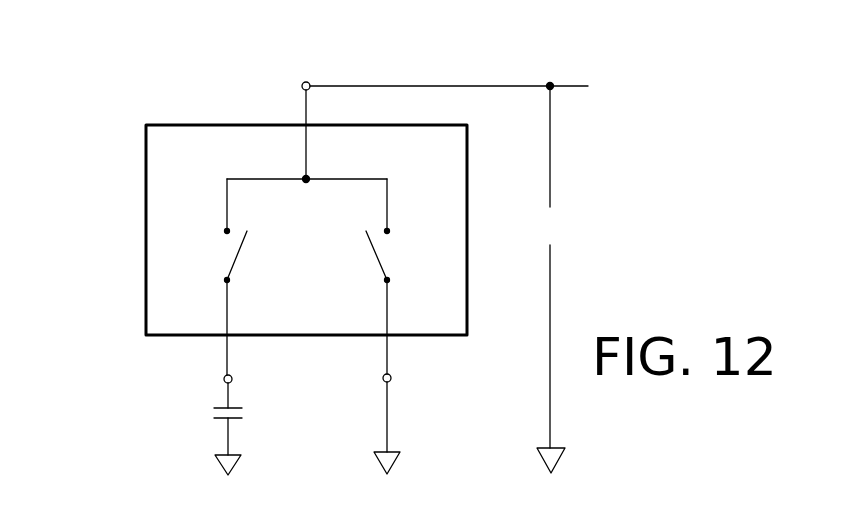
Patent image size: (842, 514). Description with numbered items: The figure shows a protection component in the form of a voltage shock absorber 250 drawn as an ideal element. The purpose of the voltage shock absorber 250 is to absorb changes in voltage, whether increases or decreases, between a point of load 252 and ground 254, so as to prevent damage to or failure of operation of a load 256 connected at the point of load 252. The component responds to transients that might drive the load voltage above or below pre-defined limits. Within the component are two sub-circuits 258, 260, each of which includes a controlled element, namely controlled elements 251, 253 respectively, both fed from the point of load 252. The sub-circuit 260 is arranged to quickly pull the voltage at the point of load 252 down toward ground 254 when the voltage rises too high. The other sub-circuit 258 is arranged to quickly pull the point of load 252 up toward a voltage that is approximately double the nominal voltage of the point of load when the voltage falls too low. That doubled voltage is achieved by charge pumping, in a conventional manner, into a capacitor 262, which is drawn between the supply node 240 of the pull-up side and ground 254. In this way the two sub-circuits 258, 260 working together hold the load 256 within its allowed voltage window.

The voltage shock absorber 250 is at (147, 82).
The point of load 252 is at (303, 80).
The controlled element 251 is at (237, 257).
The controlled element 253 is at (378, 253).
The sub-circuit 258 is at (195, 350).
The sub-circuit 260 is at (422, 347).
The supply voltage node (Vcc) 240 is at (224, 379).
The capacitor 262 is at (236, 420).
The ground 254 is at (376, 460).
The load 256 is at (561, 212).